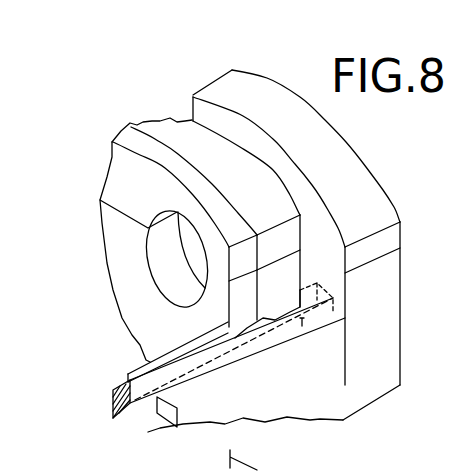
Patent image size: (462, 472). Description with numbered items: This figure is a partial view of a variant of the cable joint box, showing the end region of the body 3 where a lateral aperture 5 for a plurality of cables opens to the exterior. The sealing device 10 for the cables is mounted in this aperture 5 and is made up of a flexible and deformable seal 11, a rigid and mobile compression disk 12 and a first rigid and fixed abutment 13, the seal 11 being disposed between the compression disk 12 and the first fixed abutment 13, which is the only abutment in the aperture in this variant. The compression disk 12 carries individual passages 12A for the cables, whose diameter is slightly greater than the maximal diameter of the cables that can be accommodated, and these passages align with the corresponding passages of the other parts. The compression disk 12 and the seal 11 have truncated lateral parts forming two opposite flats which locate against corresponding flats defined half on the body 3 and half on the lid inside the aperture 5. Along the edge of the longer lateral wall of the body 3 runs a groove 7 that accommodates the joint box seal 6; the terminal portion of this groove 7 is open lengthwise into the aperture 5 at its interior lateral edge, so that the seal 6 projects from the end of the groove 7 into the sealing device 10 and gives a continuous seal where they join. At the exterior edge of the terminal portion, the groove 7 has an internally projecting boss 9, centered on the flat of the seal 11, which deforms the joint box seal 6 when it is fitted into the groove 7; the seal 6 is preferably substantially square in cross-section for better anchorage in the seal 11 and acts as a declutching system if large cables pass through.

The body 3 is at (375, 380).
The lateral aperture 5 is at (245, 318).
The joint box seal 6 is at (132, 405).
The groove 7 is at (195, 367).
The boss 9 is at (282, 318).
The sealing device 10 is at (170, 108).
The seal 11 is at (213, 150).
The compression disk 12 is at (140, 147).
The passage 12A is at (168, 255).
The first fixed abutment 13 is at (298, 127).